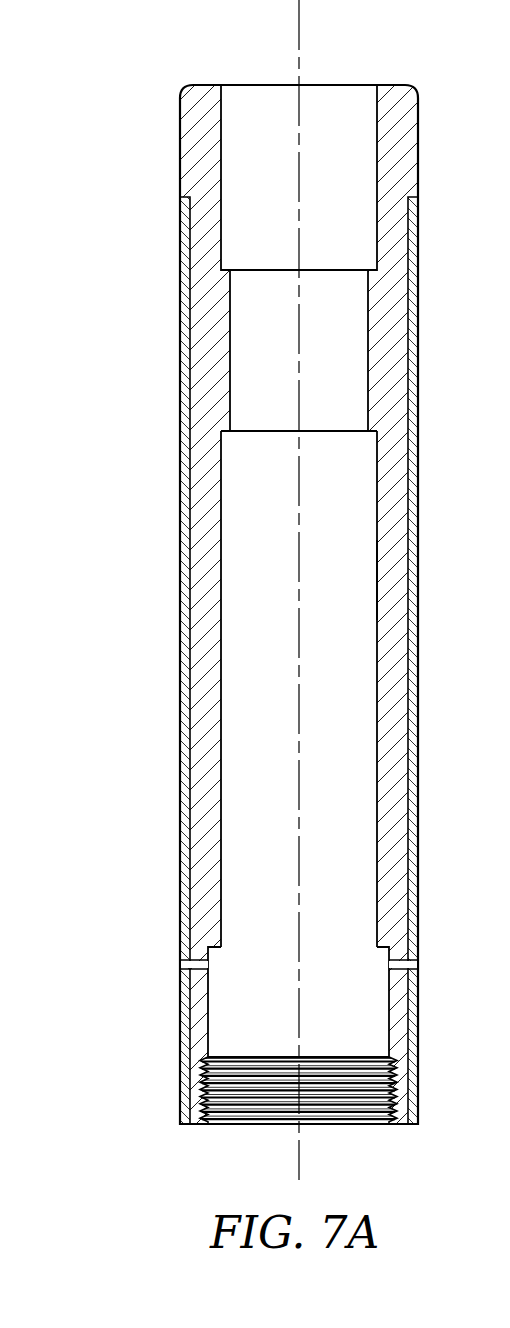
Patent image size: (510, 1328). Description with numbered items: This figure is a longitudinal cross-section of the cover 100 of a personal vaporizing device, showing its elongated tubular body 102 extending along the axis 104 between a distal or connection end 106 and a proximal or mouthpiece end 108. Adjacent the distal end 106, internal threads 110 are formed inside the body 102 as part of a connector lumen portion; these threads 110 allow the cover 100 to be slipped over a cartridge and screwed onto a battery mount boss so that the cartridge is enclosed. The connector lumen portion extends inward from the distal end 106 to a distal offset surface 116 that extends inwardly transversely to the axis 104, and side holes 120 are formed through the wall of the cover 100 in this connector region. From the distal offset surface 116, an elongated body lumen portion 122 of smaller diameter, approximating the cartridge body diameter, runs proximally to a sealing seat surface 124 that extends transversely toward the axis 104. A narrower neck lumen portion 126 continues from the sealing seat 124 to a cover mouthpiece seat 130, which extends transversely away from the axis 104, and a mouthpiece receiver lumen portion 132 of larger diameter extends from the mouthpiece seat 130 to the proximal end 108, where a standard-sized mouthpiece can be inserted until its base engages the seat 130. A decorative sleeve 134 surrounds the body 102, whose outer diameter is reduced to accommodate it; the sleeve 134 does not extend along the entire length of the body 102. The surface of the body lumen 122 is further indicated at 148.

The cover 100 is at (290, 596).
The elongated tubular body 102 is at (205, 712).
The axis 104 is at (299, 22).
The distal or connection end 106 is at (269, 1127).
The proximal or mouthpiece end 108 is at (377, 85).
The internal threads 110 is at (362, 1103).
The distal offset surface 116 is at (378, 948).
The side holes 120 is at (405, 965).
The body lumen portion 122 is at (343, 704).
The sealing seat surface 124 is at (373, 432).
The neck lumen portion 126 is at (325, 358).
The cover mouthpiece seat 130 is at (376, 268).
The mouthpiece receiver lumen portion 132 is at (340, 138).
The decorative sleeve 134 is at (179, 352).
The bore wall surface 148 is at (377, 554).